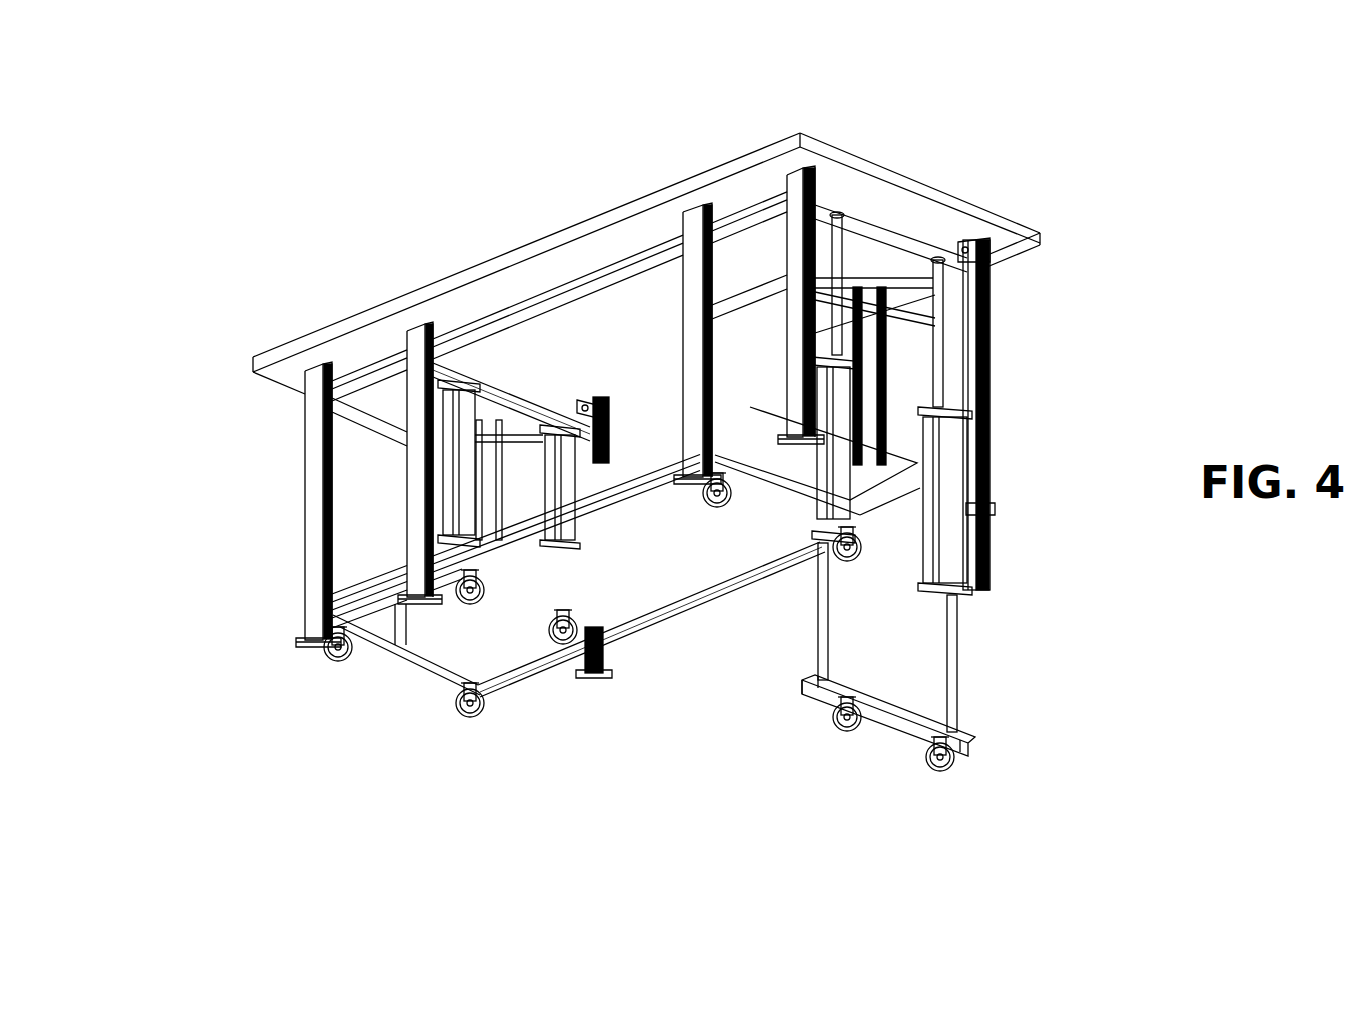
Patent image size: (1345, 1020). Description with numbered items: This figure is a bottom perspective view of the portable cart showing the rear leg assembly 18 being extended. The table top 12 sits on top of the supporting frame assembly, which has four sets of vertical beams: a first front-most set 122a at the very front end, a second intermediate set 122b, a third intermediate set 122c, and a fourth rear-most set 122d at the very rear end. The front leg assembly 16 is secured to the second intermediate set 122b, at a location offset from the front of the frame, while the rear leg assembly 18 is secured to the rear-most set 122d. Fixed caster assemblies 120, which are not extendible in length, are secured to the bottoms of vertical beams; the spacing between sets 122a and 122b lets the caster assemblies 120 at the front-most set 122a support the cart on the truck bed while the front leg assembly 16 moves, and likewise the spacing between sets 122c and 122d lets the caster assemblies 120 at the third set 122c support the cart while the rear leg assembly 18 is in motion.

The table top 12 is at (568, 262).
The front leg assembly 16 is at (480, 417).
The rear leg assembly 18 is at (1003, 559).
The caster assembly 120 is at (712, 507).
The first front-most set of vertical beams 122a is at (317, 585).
The second intermediate set of vertical beams 122b is at (418, 545).
The third intermediate set of vertical beams 122c is at (695, 420).
The fourth rear-most set of vertical beams 122d is at (797, 198).